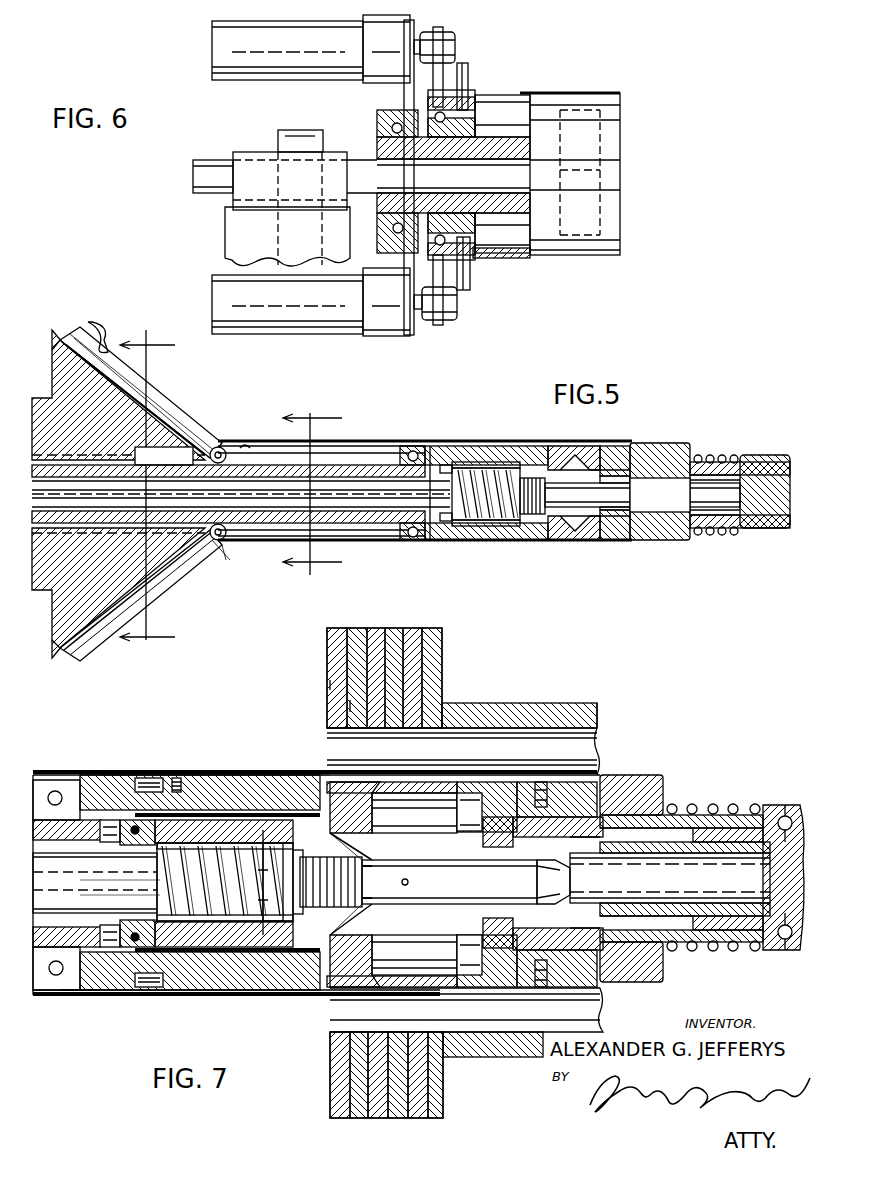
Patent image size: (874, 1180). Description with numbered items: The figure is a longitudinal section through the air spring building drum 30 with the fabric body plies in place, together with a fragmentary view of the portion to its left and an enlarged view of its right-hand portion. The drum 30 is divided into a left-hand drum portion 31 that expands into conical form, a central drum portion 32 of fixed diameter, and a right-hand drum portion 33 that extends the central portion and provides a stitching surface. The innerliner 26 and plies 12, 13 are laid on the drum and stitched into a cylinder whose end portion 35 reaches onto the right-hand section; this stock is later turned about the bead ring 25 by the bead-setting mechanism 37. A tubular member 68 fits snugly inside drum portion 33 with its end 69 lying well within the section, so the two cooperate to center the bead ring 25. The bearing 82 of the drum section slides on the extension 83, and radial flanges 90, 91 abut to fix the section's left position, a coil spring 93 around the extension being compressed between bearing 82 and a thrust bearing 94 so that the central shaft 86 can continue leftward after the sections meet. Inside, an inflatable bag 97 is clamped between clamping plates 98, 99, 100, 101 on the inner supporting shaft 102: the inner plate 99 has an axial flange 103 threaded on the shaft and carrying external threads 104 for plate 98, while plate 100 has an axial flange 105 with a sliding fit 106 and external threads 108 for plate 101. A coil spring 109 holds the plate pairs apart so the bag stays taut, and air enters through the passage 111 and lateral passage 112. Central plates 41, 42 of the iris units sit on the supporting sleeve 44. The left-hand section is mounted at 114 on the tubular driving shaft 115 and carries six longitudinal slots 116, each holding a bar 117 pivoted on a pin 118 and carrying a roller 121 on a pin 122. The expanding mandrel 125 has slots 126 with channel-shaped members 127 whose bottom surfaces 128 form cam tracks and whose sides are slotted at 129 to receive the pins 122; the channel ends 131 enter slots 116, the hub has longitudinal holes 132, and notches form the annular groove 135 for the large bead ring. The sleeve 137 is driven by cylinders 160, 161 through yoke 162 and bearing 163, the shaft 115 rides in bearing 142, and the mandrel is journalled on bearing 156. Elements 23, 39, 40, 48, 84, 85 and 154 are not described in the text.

In FIG. 7, the ply 12 is at (120, 778).
In FIG. 7, the ply 13 is at (158, 778).
In FIG. 5, the section line 23 is at (163, 489).
In FIG. 5, the bead ring 25 is at (328, 490).
In FIG. 7, the bead ring 25 is at (365, 950).
In FIG. 7, the innerliner 26 is at (188, 778).
In FIG. 5, the building drum 30 is at (430, 549).
In FIG. 7, the building drum 30 is at (225, 762).
In FIG. 5, the left-hand drum portion 31 is at (244, 444).
In FIG. 5, the central drum portion 32 is at (505, 445).
In FIG. 5, the right-hand drum portion 33 is at (660, 443).
In FIG. 7, the right-hand drum portion 33 is at (600, 775).
In FIG. 5, the end portion 35 is at (566, 445).
In FIG. 7, the end portion 35 is at (445, 788).
In FIG. 5, the bead-setting mechanism 37 is at (612, 535).
In FIG. 7, the bead-setting mechanism 37 is at (487, 790).
In FIG. 7, the washer 39 is at (350, 706).
In FIG. 7, the collar 40 is at (305, 778).
In FIG. 7, the central plate 41 is at (375, 628).
In FIG. 7, the central plate 42 is at (395, 628).
In FIG. 7, the supporting sleeve 44 is at (560, 705).
In FIG. 7, the spacer 48 is at (330, 684).
In FIG. 5, the tubular member 68 is at (592, 446).
In FIG. 7, the tubular member 68 is at (418, 975).
In FIG. 7, the end 69 is at (385, 833).
In FIG. 7, the bearing 82 is at (640, 800).
In FIG. 7, the extension 83 is at (635, 820).
In FIG. 5, the tip 84 is at (660, 528).
In FIG. 7, the tip 84 is at (535, 866).
In FIG. 5, the rod 85 is at (730, 520).
In FIG. 7, the rod 85 is at (728, 853).
In FIG. 5, the central shaft 86 is at (766, 520).
In FIG. 7, the central shaft 86 is at (660, 848).
In FIG. 7, the radial flange 90 is at (540, 793).
In FIG. 7, the radial flange 91 is at (545, 790).
In FIG. 5, the coil spring 93 is at (716, 455).
In FIG. 7, the coil spring 93 is at (713, 803).
In FIG. 5, the thrust bearing 94 is at (754, 454).
In FIG. 7, the thrust bearing 94 is at (768, 805).
In FIG. 5, the inflatable bag 97 is at (475, 526).
In FIG. 7, the inflatable bag 97 is at (212, 950).
In FIG. 7, the clamping plate 98 is at (328, 960).
In FIG. 7, the clamping plate 99 is at (305, 930).
In FIG. 7, the clamping plate 100 is at (140, 950).
In FIG. 7, the clamping plate 101 is at (118, 950).
In FIG. 5, the inner supporting shaft 102 is at (640, 495).
In FIG. 7, the inner supporting shaft 102 is at (420, 870).
In FIG. 7, the axial flange 103 is at (370, 866).
In FIG. 7, the external threads 104 is at (408, 880).
In FIG. 7, the axial flange 105 is at (112, 845).
In FIG. 7, the sliding fit 106 is at (128, 920).
In FIG. 7, the external threads 108 is at (80, 995).
In FIG. 5, the coil spring 109 is at (508, 526).
In FIG. 7, the coil spring 109 is at (264, 950).
In FIG. 7, the passage 111 is at (264, 830).
In FIG. 7, the lateral passage 112 is at (270, 950).
In FIG. 5, the mounting 114 is at (390, 462).
In FIG. 6, the tubular driving shaft 115 is at (214, 152).
In FIG. 5, the tubular driving shaft 115 is at (396, 452).
In FIG. 7, the tubular driving shaft 115 is at (70, 860).
In FIG. 5, the longitudinal slot 116 is at (214, 447).
In FIG. 5, the bar 117 is at (320, 440).
In FIG. 7, the bar 117 is at (48, 785).
In FIG. 5, the pin 118 is at (430, 445).
In FIG. 7, the pin 118 is at (82, 778).
In FIG. 5, the roller 121 is at (222, 540).
In FIG. 5, the pin 122 is at (214, 545).
In FIG. 5, the expanding mandrel 125 is at (96, 640).
In FIG. 5, the slot 126 is at (60, 340).
In FIG. 5, the channel-shaped member 127 is at (198, 458).
In FIG. 5, the bottom surface 128 is at (170, 420).
In FIG. 5, the slot 129 is at (158, 400).
In FIG. 5, the end 131 is at (192, 478).
In FIG. 5, the longitudinal hole 132 is at (48, 580).
In FIG. 5, the annular groove 135 is at (110, 329).
In FIG. 6, the sleeve 137 is at (578, 82).
In FIG. 6, the bearing 142 is at (300, 133).
In FIG. 6, the collar 154 is at (256, 160).
In FIG. 6, the bearing 156 is at (385, 134).
In FIG. 6, the cylinder 160 is at (311, 63).
In FIG. 6, the cylinder 161 is at (311, 318).
In FIG. 6, the yoke 162 is at (440, 34).
In FIG. 6, the bearing 163 is at (462, 104).